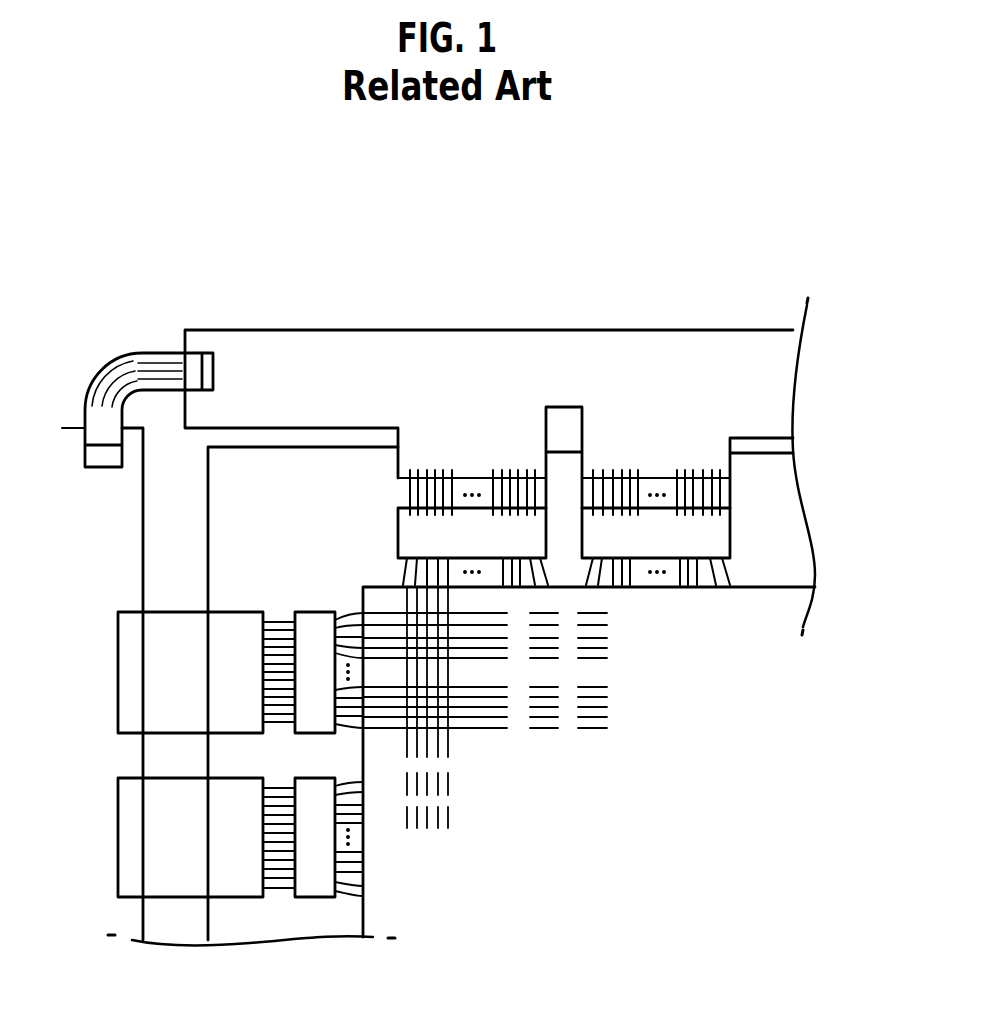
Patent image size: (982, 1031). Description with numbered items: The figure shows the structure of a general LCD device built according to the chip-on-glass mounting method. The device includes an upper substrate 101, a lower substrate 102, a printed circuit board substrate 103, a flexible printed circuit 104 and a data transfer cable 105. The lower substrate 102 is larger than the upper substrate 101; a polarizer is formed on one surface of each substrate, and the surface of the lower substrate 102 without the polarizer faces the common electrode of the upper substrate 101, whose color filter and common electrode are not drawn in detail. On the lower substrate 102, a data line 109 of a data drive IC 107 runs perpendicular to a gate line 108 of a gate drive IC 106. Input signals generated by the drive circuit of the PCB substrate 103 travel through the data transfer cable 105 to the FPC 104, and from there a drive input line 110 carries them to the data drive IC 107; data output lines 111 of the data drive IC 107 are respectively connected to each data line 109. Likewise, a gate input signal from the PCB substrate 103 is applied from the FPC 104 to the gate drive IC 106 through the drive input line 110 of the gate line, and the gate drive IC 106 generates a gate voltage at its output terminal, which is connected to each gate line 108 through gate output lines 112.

The upper substrate 101 is at (692, 809).
The lower substrate 102 is at (793, 445).
The printed circuit board substrate 103 is at (73, 427).
The flexible printed circuit 104 is at (482, 328).
The data transfer cable 105 is at (148, 352).
The gate drive IC 106 is at (313, 612).
The data drive IC 107 is at (730, 537).
The gate line 108 is at (477, 732).
The data line 109 is at (452, 817).
The drive input line 110 is at (538, 497).
The data output lines 111 is at (720, 590).
The gate output lines 112 is at (355, 892).